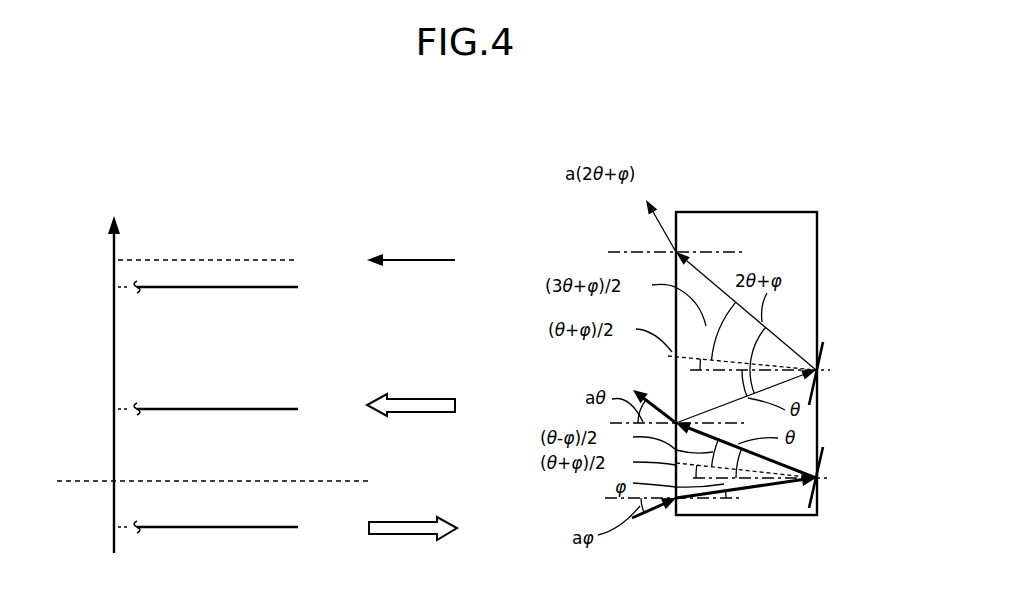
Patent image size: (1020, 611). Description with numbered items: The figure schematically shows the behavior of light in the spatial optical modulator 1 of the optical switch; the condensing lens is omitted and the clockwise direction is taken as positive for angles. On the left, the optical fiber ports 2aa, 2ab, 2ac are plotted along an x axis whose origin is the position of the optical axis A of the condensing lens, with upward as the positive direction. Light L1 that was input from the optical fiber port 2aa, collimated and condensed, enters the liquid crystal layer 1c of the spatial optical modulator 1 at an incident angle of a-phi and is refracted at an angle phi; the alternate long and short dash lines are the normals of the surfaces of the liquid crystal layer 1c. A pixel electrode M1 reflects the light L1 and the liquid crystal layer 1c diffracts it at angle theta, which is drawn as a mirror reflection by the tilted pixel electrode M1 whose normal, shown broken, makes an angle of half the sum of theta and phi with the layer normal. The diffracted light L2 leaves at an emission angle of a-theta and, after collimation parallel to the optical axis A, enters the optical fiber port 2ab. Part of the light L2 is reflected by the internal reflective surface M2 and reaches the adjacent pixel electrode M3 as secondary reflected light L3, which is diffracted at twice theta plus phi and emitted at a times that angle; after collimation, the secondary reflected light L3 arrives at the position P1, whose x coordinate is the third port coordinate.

The spatial optical modulator 1 is at (746, 303).
The liquid crystal layer 1c is at (780, 200).
The pixel electrode M1 is at (823, 466).
The reflective surface M2 is at (676, 222).
The pixel electrode M3 is at (823, 356).
The light L1 is at (414, 536).
The diffracted light L2 is at (418, 414).
The secondary reflected light L3 is at (415, 258).
The position P1 is at (226, 258).
The optical axis A is at (75, 478).
The optical fiber port 2aa is at (228, 529).
The optical fiber port 2ab is at (222, 408).
The optical fiber port 2ac is at (196, 289).